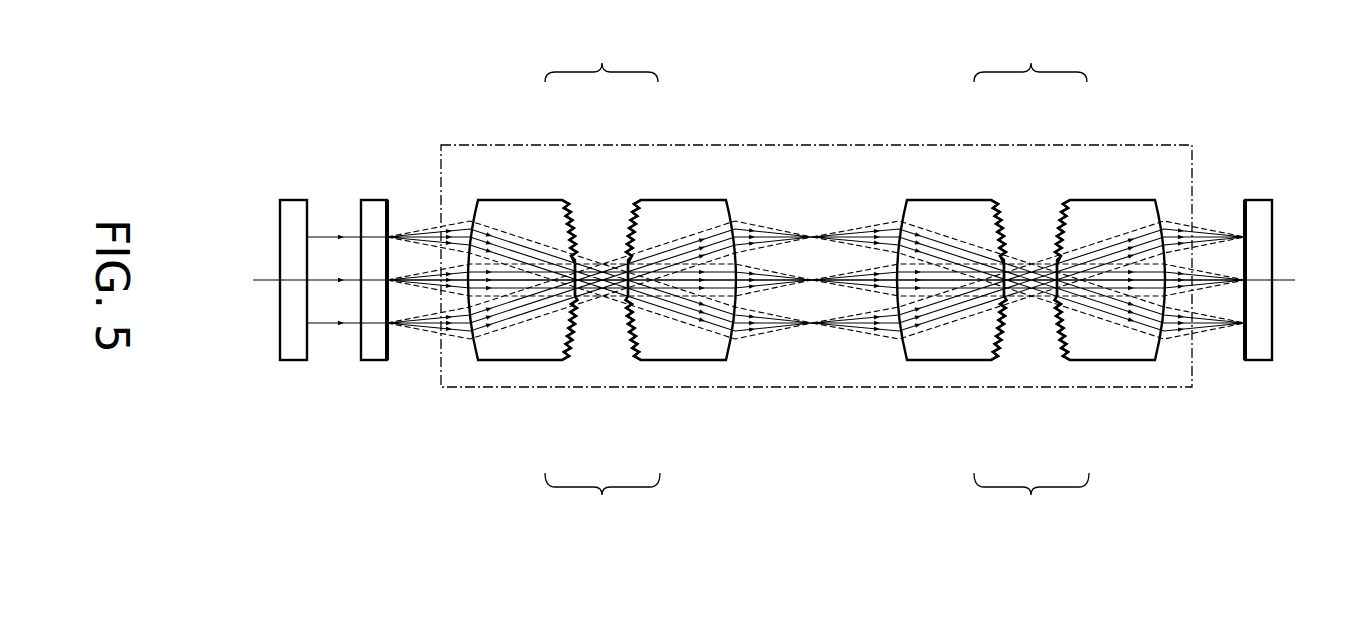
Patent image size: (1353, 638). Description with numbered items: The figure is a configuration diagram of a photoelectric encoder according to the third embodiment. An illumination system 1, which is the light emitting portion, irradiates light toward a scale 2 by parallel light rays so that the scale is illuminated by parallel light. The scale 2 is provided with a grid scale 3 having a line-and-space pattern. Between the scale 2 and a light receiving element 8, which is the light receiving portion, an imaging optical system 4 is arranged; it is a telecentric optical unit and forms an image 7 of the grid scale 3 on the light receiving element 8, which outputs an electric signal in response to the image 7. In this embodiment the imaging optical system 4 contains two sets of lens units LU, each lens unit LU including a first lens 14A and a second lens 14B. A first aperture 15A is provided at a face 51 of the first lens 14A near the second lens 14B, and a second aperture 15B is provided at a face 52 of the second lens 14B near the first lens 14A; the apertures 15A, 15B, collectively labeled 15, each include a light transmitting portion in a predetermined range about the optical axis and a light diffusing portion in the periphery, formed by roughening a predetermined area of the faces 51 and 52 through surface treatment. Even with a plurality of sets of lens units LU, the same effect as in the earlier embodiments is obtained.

The illumination system 1 is at (284, 200).
The scale 2 is at (361, 200).
The grid scale 3 is at (389, 215).
The imaging optical system 4 is at (467, 145).
The lens unit LU is at (816, 57).
The first lens 14A is at (515, 212).
The second lens 14B is at (689, 212).
The diffractive surfaces 15 is at (817, 498).
The first aperture 15A is at (583, 330).
The second aperture 15B is at (618, 330).
The face 51 is at (567, 353).
The face 52 is at (637, 353).
The image 7 is at (1245, 212).
The light receiving element 8 is at (1272, 200).